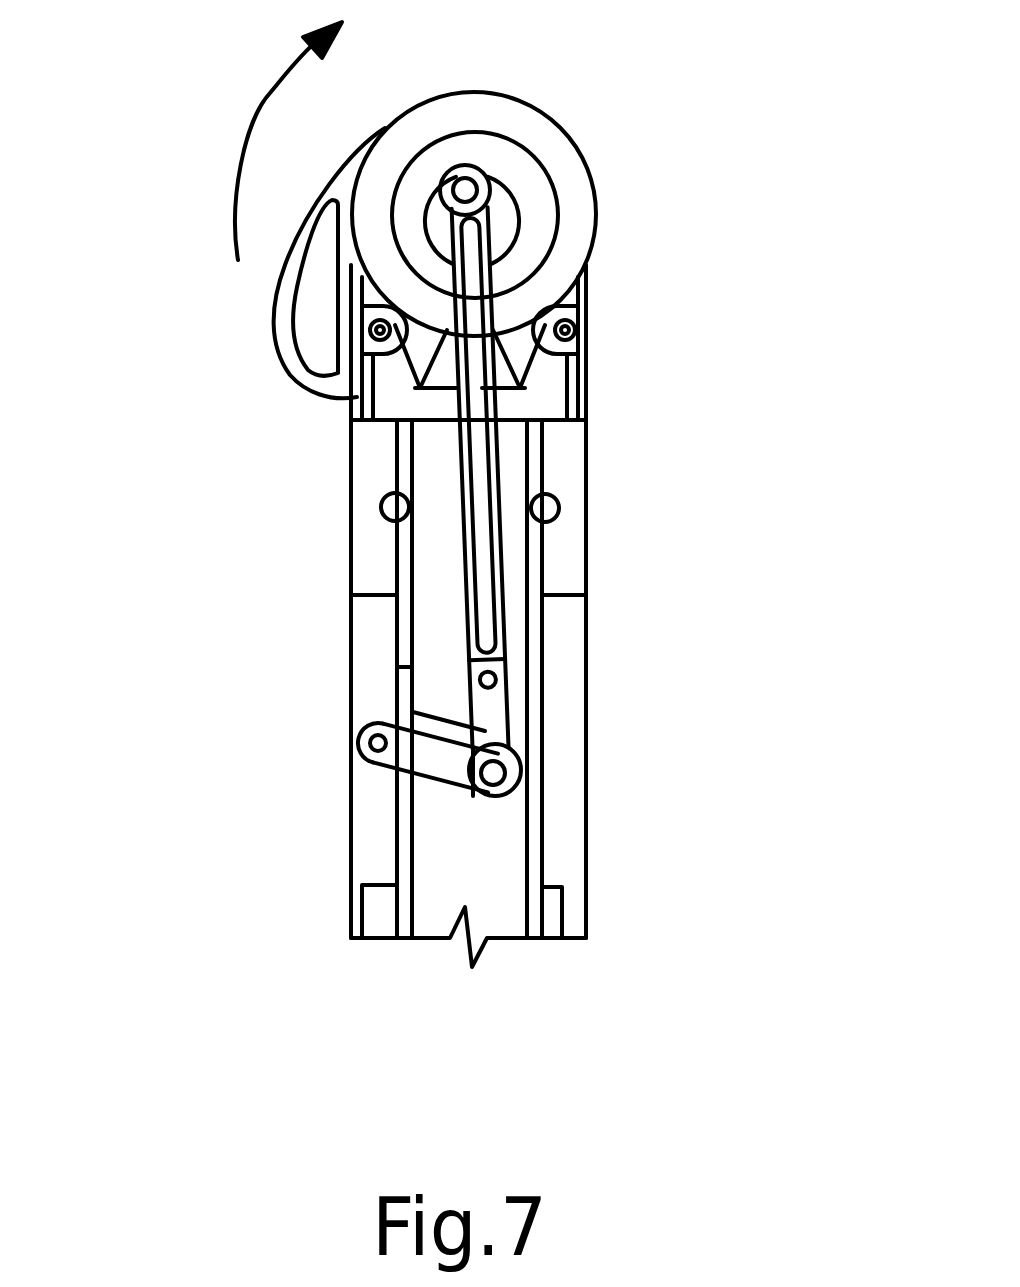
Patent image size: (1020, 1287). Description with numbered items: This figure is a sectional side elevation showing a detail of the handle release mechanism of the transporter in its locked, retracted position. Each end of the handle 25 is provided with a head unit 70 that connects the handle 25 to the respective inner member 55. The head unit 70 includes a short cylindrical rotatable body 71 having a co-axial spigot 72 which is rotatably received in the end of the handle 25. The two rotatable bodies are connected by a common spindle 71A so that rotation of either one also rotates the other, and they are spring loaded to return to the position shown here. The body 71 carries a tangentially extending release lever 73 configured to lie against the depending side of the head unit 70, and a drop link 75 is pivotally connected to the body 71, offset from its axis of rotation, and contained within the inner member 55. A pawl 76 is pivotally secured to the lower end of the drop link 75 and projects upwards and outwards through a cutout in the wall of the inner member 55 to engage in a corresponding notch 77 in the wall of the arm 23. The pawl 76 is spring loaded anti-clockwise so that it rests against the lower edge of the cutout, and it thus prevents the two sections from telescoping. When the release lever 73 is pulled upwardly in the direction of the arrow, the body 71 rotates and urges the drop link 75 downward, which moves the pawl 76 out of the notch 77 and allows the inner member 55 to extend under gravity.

The arm 23 is at (560, 737).
The handle 25 is at (546, 97).
The inner member 55 is at (533, 548).
The head unit 70 is at (618, 306).
The rotatable body 71 is at (577, 140).
The spindle 71A is at (497, 203).
The spigot 72 is at (520, 240).
The release lever 73 is at (272, 307).
The drop link 75 is at (463, 540).
The pawl 76 is at (457, 800).
The notch 77 is at (380, 768).